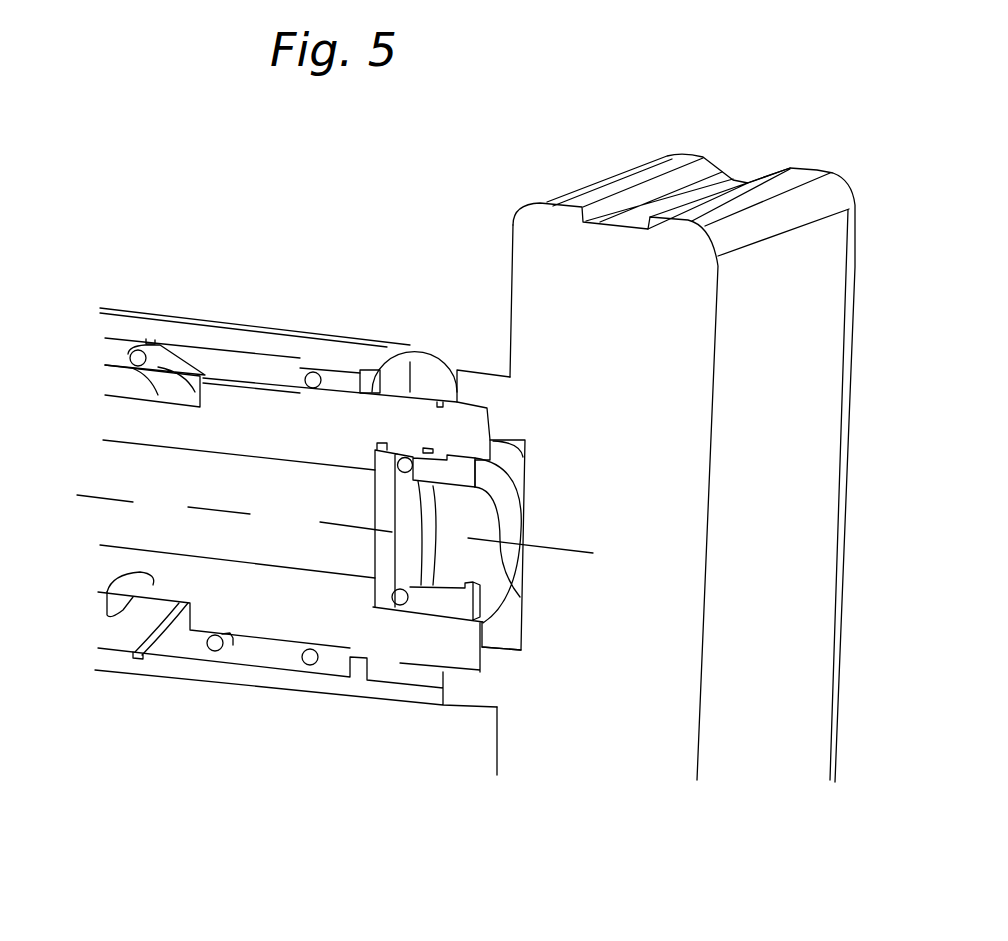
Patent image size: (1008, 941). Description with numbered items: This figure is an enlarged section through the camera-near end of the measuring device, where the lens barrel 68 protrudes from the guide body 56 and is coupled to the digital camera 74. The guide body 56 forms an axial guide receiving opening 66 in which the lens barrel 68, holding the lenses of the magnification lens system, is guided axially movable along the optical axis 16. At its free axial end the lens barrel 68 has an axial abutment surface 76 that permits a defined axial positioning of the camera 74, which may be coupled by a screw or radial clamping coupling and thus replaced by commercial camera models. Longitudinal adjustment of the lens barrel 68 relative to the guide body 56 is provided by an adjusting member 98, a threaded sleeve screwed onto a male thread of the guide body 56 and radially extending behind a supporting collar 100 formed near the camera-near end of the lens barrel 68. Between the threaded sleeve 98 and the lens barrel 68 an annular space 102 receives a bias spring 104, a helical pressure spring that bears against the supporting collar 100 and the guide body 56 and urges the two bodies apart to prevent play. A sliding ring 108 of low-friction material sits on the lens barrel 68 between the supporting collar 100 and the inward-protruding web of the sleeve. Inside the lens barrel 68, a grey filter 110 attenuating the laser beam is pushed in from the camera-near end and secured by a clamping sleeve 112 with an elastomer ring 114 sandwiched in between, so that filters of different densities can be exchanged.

The optical axis 16 is at (90, 495).
The guide body 56 is at (110, 388).
The guide receiving opening 66 is at (153, 585).
The lens barrel 68 is at (213, 433).
The digital camera 74 is at (845, 577).
The axial abutment surface 76 is at (492, 630).
The adjusting member 98 is at (290, 330).
The supporting collar 100 is at (340, 382).
The annular space 102 is at (190, 645).
The bias spring 104 is at (172, 360).
The sliding ring 108 is at (372, 384).
The grey filter 110 is at (380, 548).
The clamping sleeve 112 is at (507, 517).
The elastomer ring 114 is at (410, 458).